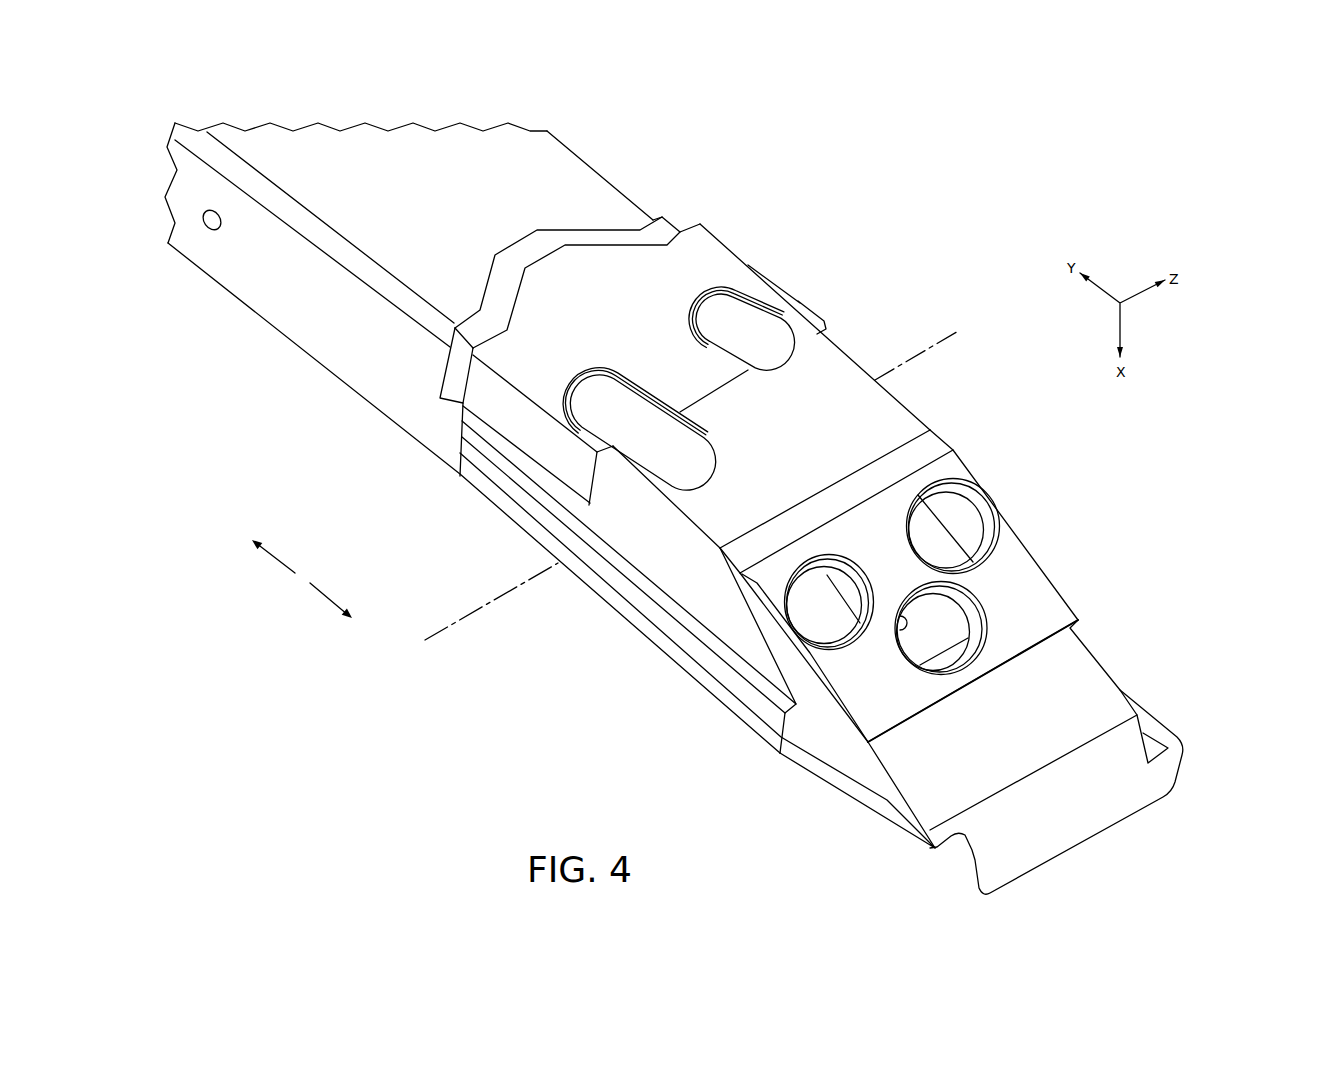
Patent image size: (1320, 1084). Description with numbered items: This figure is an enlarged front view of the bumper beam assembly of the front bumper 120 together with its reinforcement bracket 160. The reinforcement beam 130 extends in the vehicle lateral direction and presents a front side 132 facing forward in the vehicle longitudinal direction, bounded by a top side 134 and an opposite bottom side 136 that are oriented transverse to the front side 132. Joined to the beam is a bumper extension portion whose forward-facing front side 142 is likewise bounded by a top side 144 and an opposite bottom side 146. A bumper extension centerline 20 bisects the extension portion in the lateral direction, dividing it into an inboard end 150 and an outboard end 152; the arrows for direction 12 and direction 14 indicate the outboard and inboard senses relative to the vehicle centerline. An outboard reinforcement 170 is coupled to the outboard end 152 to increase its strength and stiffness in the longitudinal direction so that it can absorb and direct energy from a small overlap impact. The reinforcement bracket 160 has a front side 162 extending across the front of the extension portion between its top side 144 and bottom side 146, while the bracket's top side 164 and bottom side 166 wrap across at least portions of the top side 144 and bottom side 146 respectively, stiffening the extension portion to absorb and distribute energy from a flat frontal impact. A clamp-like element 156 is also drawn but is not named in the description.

The outboard direction 12 is at (323, 597).
The inboard direction 14 is at (272, 560).
The bumper extension centerline 20 is at (440, 633).
The front bumper 120 is at (717, 202).
The reinforcement beam 130 is at (600, 158).
The front side 132 is at (357, 167).
The top side 134 is at (615, 188).
The bottom side 136 is at (323, 337).
The front side 142 is at (852, 379).
The top side 144 is at (933, 423).
The bottom side 146 is at (703, 600).
The inboard end 150 is at (433, 476).
The outboard end 152 is at (1192, 715).
The clamp bracket 156 is at (448, 366).
The reinforcement bracket 160 is at (838, 293).
The front side 162 is at (785, 280).
The top side 164 is at (733, 250).
The bottom side 166 is at (515, 437).
The outboard reinforcement 170 is at (1013, 565).